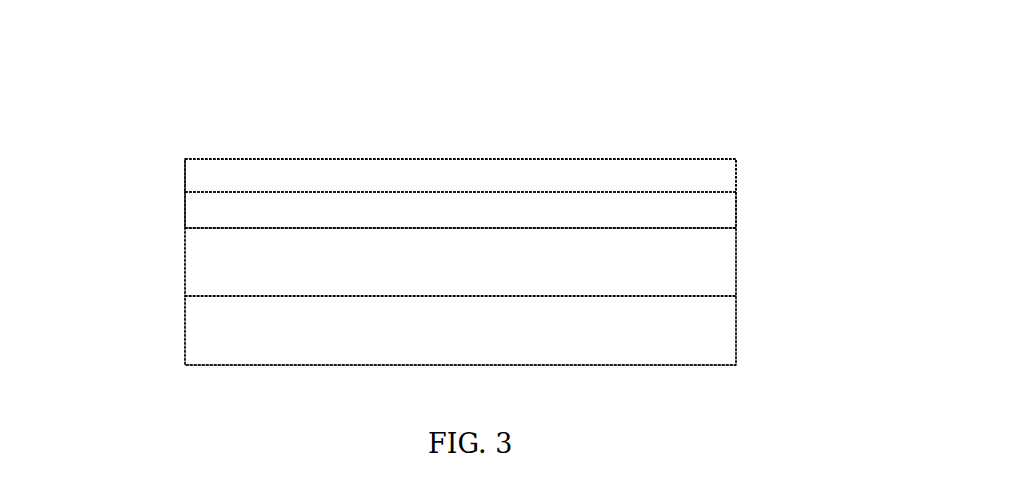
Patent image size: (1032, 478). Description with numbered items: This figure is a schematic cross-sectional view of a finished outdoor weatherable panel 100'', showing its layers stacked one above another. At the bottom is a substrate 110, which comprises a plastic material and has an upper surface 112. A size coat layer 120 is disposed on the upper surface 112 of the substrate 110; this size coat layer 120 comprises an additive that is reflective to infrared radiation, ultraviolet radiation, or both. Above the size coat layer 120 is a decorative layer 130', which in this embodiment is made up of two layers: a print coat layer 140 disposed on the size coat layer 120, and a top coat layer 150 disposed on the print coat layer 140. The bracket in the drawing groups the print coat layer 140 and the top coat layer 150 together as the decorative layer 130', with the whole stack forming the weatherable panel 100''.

The outdoor weatherable panel 100'' is at (460, 204).
The top coat layer 150 is at (736, 176).
The print coat layer 140 is at (736, 212).
The size coat layer 120 is at (736, 262).
The substrate 110 is at (736, 332).
The upper surface 112 is at (220, 298).
The decorative layer 130' is at (386, 193).